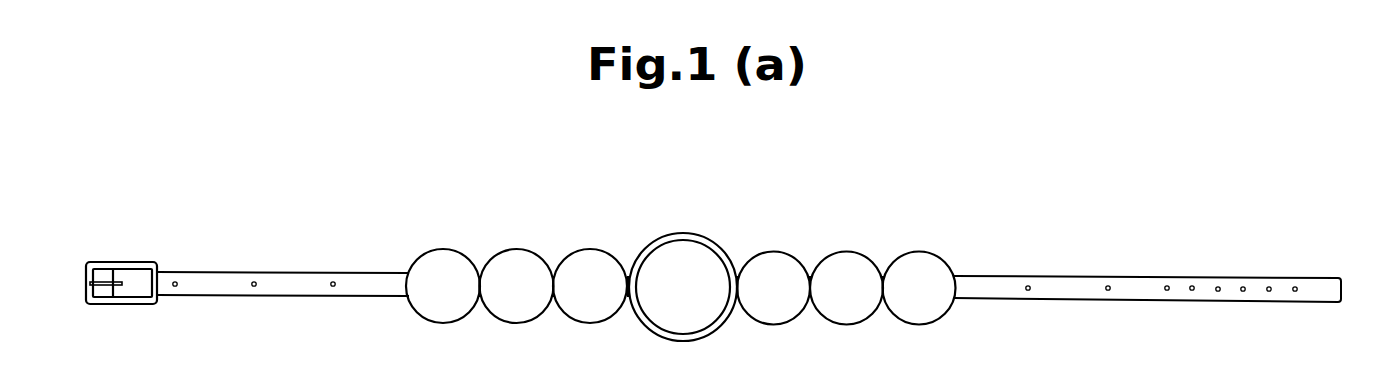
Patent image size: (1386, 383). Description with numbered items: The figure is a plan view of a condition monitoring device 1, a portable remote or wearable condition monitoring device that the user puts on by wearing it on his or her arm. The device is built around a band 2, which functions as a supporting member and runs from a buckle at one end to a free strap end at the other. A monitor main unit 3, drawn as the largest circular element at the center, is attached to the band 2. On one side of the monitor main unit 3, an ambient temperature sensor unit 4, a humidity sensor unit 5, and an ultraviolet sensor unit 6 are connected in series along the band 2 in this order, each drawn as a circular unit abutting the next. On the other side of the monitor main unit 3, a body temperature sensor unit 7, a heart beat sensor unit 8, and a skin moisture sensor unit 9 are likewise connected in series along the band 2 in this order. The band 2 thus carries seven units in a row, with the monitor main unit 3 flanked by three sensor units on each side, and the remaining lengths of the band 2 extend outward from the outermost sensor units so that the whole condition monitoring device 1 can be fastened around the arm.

The condition monitoring device 1 is at (750, 178).
The band 2 is at (1000, 283).
The monitor main unit 3 is at (683, 234).
The ambient temperature sensor unit 4 is at (773, 251).
The humidity sensor unit 5 is at (846, 251).
The ultraviolet sensor unit 6 is at (919, 251).
The body temperature sensor unit 7 is at (590, 248).
The heart beat sensor unit 8 is at (517, 248).
The skin moisture sensor unit 9 is at (443, 248).